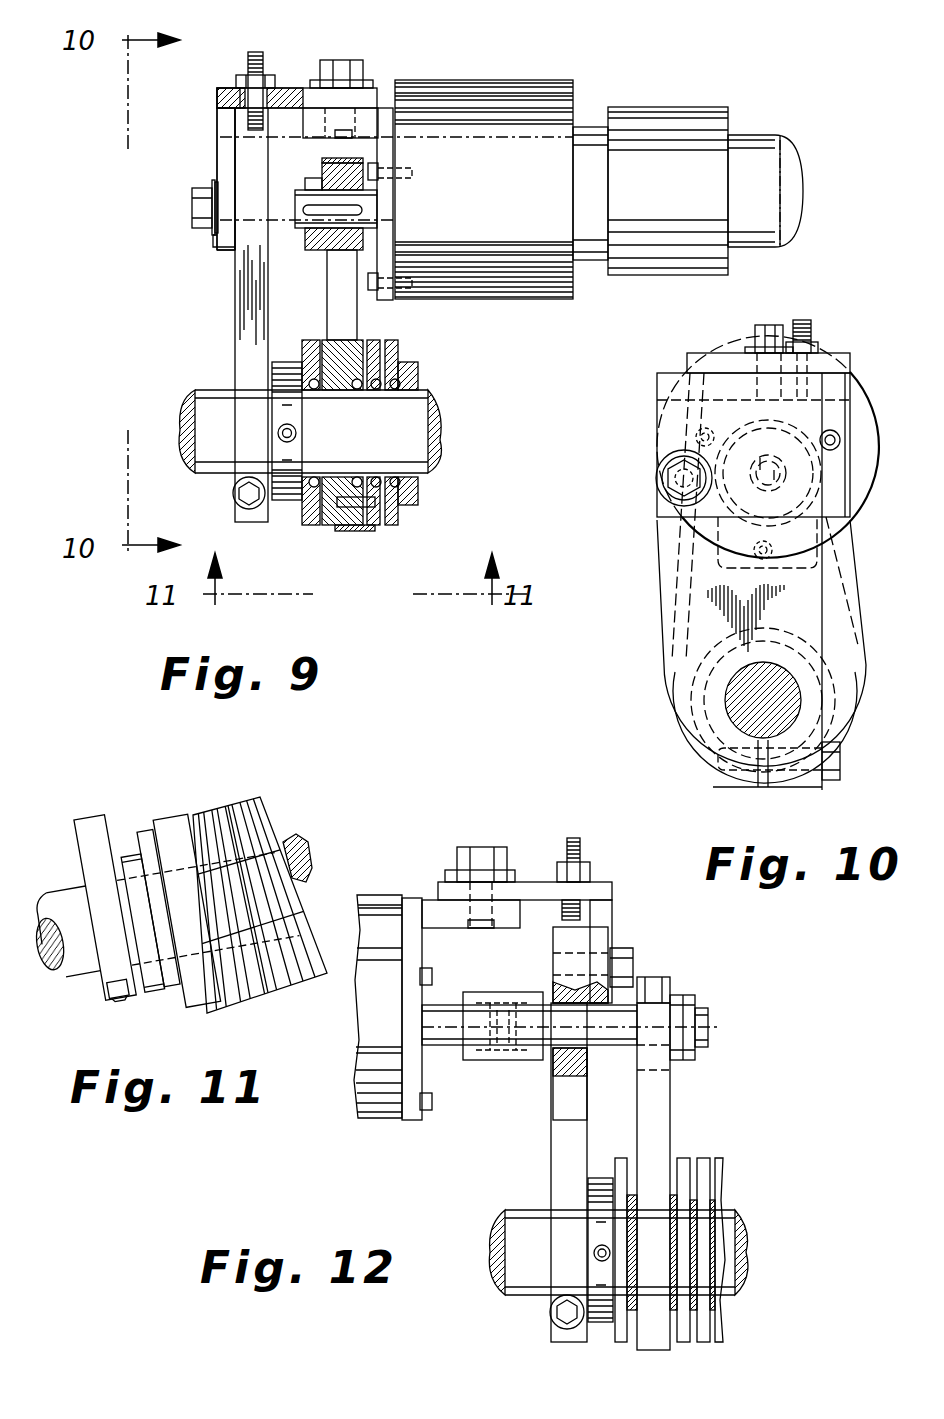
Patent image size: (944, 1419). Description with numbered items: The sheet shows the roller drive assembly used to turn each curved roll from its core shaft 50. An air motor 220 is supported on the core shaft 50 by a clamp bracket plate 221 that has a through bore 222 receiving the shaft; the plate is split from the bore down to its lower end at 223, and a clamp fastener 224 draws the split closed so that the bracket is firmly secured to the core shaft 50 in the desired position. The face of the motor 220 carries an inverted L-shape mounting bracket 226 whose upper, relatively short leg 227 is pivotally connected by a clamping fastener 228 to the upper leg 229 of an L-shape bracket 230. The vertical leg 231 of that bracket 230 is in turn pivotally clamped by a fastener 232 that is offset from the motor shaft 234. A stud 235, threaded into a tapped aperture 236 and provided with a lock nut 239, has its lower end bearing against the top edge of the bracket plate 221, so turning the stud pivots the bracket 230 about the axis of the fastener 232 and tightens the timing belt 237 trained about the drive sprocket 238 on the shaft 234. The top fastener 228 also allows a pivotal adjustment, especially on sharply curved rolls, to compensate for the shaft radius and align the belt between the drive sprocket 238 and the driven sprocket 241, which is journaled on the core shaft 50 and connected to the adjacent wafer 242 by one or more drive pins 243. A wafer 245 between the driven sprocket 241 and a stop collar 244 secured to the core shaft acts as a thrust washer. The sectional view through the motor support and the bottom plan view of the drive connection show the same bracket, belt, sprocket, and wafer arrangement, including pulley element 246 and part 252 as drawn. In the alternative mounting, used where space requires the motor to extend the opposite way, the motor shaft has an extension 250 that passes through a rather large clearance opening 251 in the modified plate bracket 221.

In FIG. 9, the core shaft 50 is at (422, 412).
In FIG. 10, the core shaft 50 is at (800, 704).
In FIG. 11, the core shaft 50 is at (82, 970).
In FIG. 12, the core shaft 50 is at (515, 1210).
In FIG. 9, the air motor 220 is at (480, 72).
In FIG. 10, the air motor 220 is at (878, 480).
In FIG. 12, the air motor 220 is at (380, 1118).
In FIG. 9, the clamp bracket plate 221 is at (248, 296).
In FIG. 11, the clamp bracket plate 221 is at (80, 828).
In FIG. 12, the clamp bracket plate 221 is at (553, 1138).
In FIG. 10, the through bore 222 is at (800, 668).
In FIG. 10, the split 223 is at (763, 787).
In FIG. 9, the clamp fastener 224 is at (252, 510).
In FIG. 10, the clamp fastener 224 is at (840, 770).
In FIG. 11, the clamp fastener 224 is at (120, 1005).
In FIG. 12, the clamp fastener 224 is at (552, 1318).
In FIG. 9, the inverted L-shape mounting bracket 226 is at (386, 112).
In FIG. 10, the inverted L-shape mounting bracket 226 is at (845, 456).
In FIG. 12, the inverted L-shape mounting bracket 226 is at (422, 952).
In FIG. 10, the upper relatively short leg 227 is at (845, 390).
In FIG. 9, the clamping fastener 228 is at (345, 62).
In FIG. 10, the clamping fastener 228 is at (757, 332).
In FIG. 12, the clamping fastener 228 is at (481, 847).
In FIG. 9, the upper leg 229 is at (290, 100).
In FIG. 10, the upper leg 229 is at (702, 352).
In FIG. 12, the upper leg 229 is at (535, 882).
In FIG. 9, the L-shape bracket 230 is at (212, 135).
In FIG. 10, the L-shape bracket 230 is at (822, 413).
In FIG. 12, the L-shape bracket 230 is at (612, 920).
In FIG. 9, the vertical leg 231 is at (230, 148).
In FIG. 9, the fastener 232 is at (200, 203).
In FIG. 10, the fastener 232 is at (672, 479).
In FIG. 9, the shaft 234 is at (362, 210).
In FIG. 10, the shaft 234 is at (762, 430).
In FIG. 9, the stud 235 is at (255, 52).
In FIG. 10, the stud 235 is at (805, 322).
In FIG. 12, the stud 235 is at (573, 838).
In FIG. 9, the tapped aperture 236 is at (230, 96).
In FIG. 9, the timing belt 237 is at (354, 320).
In FIG. 12, the timing belt 237 is at (672, 1103).
In FIG. 9, the drive sprocket 238 is at (332, 250).
In FIG. 12, the drive sprocket 238 is at (673, 985).
In FIG. 9, the lock nut 239 is at (243, 76).
In FIG. 9, the driven sprocket 241 is at (373, 525).
In FIG. 11, the driven sprocket 241 is at (185, 820).
In FIG. 9, the wafer 242 is at (390, 525).
In FIG. 11, the wafer 242 is at (258, 1000).
In FIG. 9, the drive pins 243 is at (352, 525).
In FIG. 9, the stop collar 244 is at (285, 365).
In FIG. 11, the stop collar 244 is at (160, 995).
In FIG. 12, the stop collar 244 is at (600, 1250).
In FIG. 9, the wafer 245 is at (308, 345).
In FIG. 11, the wafer 245 is at (156, 832).
In FIG. 11, the pulley 246 is at (228, 800).
In FIG. 12, the extension 250 is at (613, 1045).
In FIG. 12, the clearance opening 251 is at (555, 1052).
In FIG. 12, the block 252 is at (500, 1060).